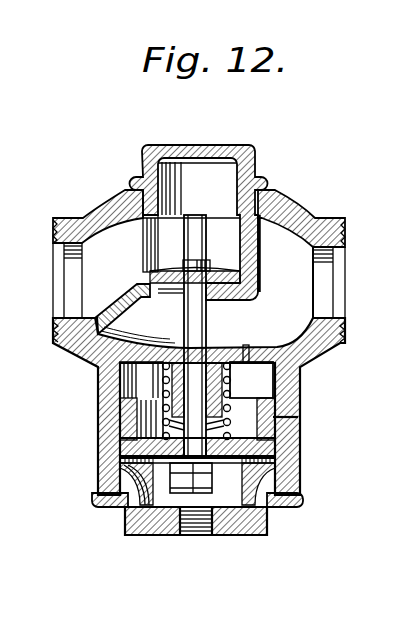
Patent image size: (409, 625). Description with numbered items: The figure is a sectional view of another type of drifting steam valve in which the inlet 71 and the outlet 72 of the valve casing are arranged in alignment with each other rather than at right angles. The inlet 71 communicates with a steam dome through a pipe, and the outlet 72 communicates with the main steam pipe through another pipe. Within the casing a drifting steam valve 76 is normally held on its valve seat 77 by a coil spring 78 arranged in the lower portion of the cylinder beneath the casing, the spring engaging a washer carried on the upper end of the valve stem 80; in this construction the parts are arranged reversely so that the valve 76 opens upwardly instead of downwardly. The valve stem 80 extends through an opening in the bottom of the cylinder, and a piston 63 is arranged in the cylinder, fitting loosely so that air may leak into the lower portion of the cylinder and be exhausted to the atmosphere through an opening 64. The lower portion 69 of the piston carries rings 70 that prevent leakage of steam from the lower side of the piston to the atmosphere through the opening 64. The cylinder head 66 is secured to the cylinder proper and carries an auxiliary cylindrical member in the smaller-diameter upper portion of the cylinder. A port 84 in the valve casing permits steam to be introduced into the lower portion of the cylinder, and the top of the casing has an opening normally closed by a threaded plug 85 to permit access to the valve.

The threaded plug 85 is at (257, 168).
The drifting steam valve 76 is at (214, 273).
The valve seat 77 is at (153, 284).
The inlet 71 is at (70, 279).
The outlet 72 is at (322, 288).
The valve stem 80 is at (207, 323).
The port 84 is at (247, 349).
The coil spring 78 is at (231, 391).
The rings 70 is at (266, 412).
The opening 64 is at (294, 419).
The lower portion of the piston 69 is at (266, 446).
The piston 63 is at (300, 472).
The cylinder head 66 is at (279, 509).